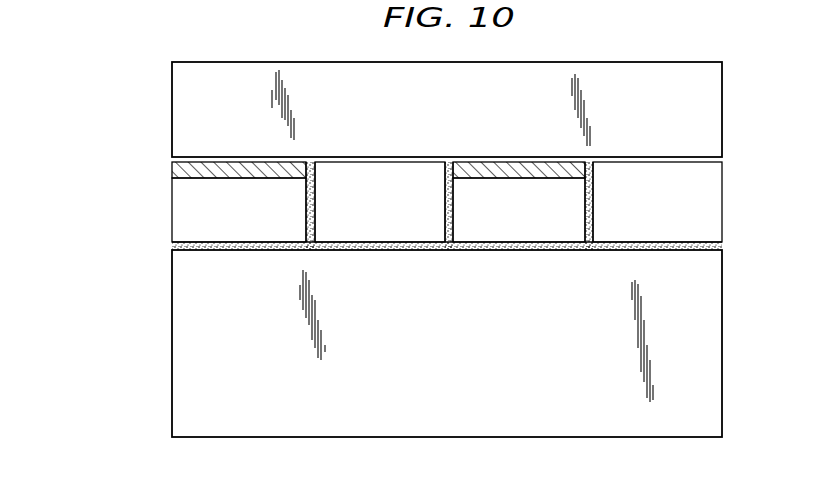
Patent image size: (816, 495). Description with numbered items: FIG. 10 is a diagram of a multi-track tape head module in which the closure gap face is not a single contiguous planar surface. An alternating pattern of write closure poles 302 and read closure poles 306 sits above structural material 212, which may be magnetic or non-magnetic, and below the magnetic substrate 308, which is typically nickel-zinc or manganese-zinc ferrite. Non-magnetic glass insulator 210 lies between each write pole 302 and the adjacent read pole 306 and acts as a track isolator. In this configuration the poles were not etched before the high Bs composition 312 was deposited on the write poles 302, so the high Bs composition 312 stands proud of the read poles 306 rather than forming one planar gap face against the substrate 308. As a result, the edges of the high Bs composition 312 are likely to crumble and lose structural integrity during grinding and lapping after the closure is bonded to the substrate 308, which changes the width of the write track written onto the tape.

The substrate 308 is at (431, 121).
The high Bs composition 312 is at (172, 168).
The write closure pole 302 is at (224, 223).
The read closure pole 306 is at (364, 223).
The glass insulator 210 is at (502, 250).
The material 212 is at (429, 362).